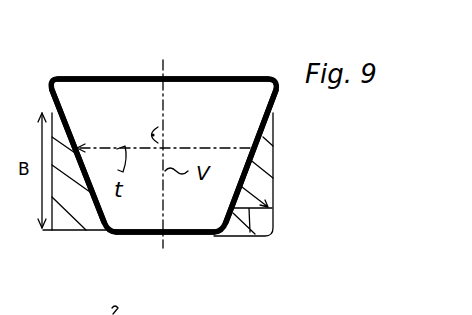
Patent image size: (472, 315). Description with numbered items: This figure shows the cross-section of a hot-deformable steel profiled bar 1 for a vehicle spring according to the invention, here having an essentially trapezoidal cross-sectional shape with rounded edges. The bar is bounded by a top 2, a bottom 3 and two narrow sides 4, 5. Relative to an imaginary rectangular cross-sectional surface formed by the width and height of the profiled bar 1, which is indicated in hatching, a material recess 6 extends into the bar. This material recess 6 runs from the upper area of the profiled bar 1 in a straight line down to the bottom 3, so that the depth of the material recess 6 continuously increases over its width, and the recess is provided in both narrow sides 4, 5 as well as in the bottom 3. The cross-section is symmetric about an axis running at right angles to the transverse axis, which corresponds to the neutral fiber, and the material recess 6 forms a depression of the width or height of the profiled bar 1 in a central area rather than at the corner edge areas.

The profiled bar 1 is at (289, 0).
The top 2 is at (97, 77).
The bottom 3 is at (207, 237).
The narrow side 4 is at (273, 115).
The narrow side 5 is at (40, 116).
The material recess 6 is at (266, 193).